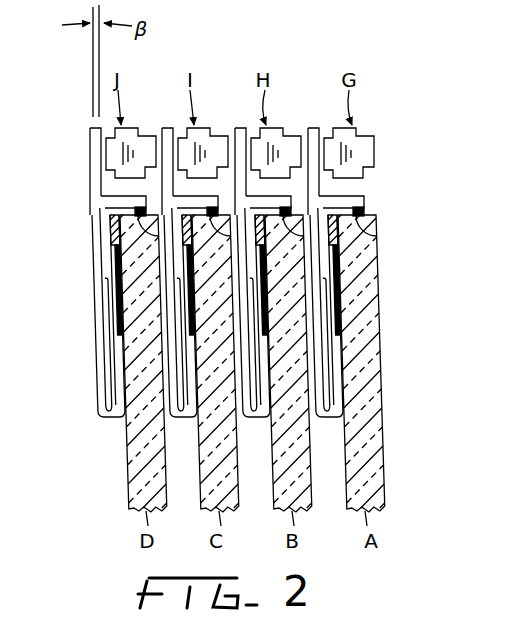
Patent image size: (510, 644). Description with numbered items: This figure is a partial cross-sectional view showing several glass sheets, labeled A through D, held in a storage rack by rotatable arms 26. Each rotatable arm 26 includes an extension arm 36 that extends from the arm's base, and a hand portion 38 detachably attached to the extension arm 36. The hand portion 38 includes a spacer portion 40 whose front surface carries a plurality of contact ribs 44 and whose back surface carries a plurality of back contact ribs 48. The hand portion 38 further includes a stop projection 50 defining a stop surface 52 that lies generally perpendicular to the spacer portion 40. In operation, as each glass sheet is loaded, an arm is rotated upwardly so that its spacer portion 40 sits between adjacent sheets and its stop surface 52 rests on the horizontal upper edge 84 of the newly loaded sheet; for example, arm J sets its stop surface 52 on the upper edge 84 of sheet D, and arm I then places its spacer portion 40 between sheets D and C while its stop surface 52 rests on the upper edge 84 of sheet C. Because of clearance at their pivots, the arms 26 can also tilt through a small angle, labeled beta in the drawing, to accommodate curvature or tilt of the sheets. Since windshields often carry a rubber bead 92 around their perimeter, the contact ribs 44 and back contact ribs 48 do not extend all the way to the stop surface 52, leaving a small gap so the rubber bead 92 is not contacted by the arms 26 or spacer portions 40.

The rotatable arm 26 is at (252, 108).
The extension arm 36 is at (183, 128).
The hand portion 38 is at (238, 128).
The spacer portion 40 is at (176, 420).
The contact ribs 44 is at (112, 333).
The back contact ribs 48 is at (162, 387).
The stop projection 50 is at (268, 198).
The stop surface 52 is at (114, 241).
The horizontal upper edge 84 is at (221, 204).
The rubber bead 92 is at (114, 266).